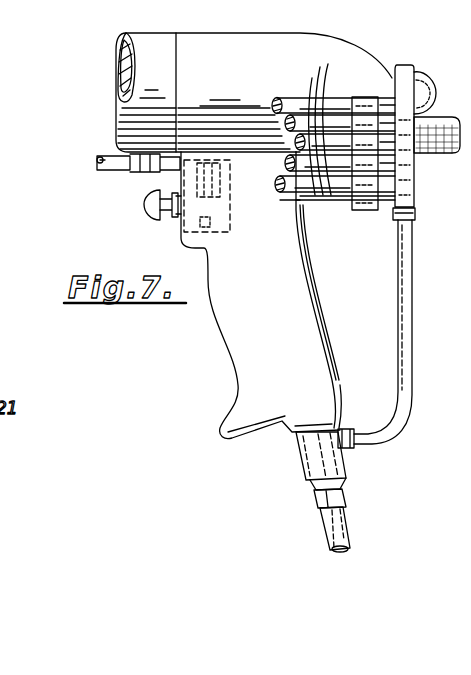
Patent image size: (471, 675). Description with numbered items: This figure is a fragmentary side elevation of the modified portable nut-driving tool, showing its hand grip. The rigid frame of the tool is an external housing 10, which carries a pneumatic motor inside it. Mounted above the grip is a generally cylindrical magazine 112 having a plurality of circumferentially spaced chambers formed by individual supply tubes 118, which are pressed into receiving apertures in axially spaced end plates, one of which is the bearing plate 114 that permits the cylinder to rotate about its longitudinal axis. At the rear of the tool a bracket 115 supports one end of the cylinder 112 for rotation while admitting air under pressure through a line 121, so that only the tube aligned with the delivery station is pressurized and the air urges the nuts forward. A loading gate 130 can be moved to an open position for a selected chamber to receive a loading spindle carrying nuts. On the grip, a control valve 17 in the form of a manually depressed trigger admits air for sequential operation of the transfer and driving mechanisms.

The external housing 10 is at (272, 30).
The control valve 17 is at (226, 224).
The cylindrical magazine 112 is at (276, 190).
The bearing plate 114 is at (362, 200).
The bracket 115 is at (413, 187).
The supply tubes 118 is at (306, 129).
The line 121 is at (352, 537).
The loading gate 130 is at (435, 117).